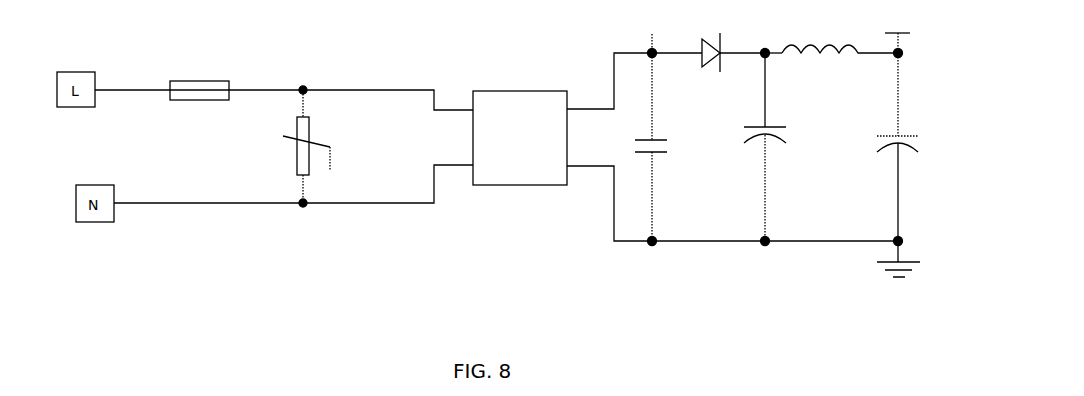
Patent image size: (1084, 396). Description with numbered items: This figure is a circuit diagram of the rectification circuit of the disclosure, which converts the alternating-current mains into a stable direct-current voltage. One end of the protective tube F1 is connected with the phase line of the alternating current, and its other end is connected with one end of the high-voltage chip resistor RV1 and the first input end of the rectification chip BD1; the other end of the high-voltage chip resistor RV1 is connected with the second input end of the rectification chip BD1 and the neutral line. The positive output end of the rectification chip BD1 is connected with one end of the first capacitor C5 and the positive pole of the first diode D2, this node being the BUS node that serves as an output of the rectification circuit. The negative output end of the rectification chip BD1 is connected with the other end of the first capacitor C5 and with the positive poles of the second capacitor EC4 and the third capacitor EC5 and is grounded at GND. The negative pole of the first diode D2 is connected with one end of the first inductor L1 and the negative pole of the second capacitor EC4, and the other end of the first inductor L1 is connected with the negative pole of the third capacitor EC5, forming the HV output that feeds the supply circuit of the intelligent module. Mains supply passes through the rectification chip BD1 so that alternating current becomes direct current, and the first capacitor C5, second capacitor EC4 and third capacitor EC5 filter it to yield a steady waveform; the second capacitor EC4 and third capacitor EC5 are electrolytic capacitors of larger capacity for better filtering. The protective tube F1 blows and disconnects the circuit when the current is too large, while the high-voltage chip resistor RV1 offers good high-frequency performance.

The protective tube F1 is at (199, 78).
The high-voltage chip resistor RV1 is at (325, 146).
The rectification chip BD1 is at (517, 125).
The first capacitor C5 is at (662, 147).
The first diode D2 is at (729, 44).
The inductor L1 is at (831, 32).
The second capacitor EC4 is at (780, 147).
The third capacitor EC5 is at (908, 147).
The bus node BUS is at (646, 37).
The high voltage output HV is at (897, 36).
The ground GND is at (898, 276).